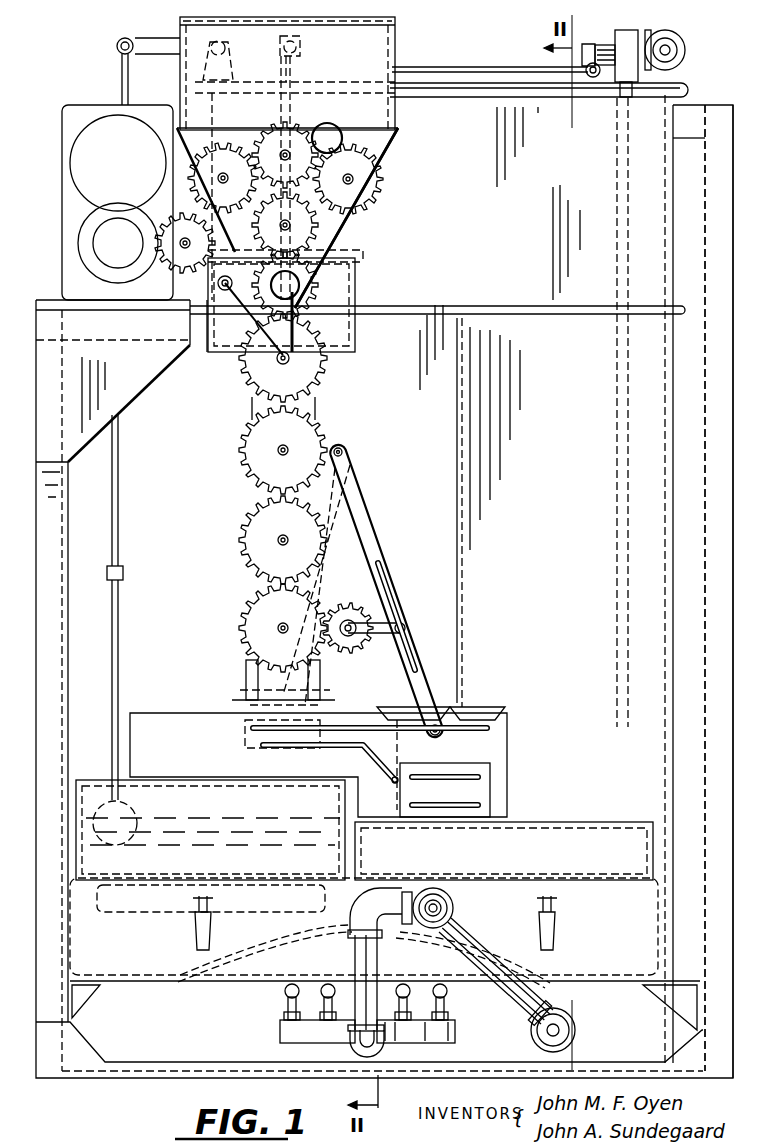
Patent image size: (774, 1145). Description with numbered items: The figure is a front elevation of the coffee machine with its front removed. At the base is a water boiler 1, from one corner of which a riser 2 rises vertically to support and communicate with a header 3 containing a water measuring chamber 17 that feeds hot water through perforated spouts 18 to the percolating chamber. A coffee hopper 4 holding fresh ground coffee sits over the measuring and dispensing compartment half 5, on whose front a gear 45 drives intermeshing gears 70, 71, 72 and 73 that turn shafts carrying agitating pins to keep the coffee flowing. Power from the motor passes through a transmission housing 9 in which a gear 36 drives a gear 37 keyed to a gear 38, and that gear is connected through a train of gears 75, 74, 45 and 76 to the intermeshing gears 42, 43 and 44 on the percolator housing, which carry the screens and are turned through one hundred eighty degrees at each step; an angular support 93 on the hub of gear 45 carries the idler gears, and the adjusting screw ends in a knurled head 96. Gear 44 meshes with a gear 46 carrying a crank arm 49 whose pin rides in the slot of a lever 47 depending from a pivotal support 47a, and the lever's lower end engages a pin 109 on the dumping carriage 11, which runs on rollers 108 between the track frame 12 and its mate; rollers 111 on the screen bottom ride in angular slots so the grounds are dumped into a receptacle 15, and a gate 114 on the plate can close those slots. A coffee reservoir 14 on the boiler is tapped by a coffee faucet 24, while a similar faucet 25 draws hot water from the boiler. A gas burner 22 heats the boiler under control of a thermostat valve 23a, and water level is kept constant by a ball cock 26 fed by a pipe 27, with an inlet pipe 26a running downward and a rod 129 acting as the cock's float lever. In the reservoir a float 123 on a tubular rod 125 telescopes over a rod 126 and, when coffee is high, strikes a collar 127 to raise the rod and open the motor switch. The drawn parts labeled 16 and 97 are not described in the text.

The water boiler 1 is at (655, 807).
The riser 2 is at (655, 478).
The header 3 is at (655, 222).
The coffee hopper 4 is at (388, 44).
The separable half of coffee measuring and dispensing compartment 5 is at (375, 150).
The transmission housing 9 is at (67, 212).
The dumping carriage 11 is at (397, 713).
The track frame 12 is at (170, 718).
The coffee reservoir 14 is at (98, 786).
The receptacle 15 is at (517, 835).
The top rail 16 is at (680, 83).
The water measuring chamber 17 is at (347, 250).
The perforated spouts 18 is at (345, 340).
The gas burner 22 is at (280, 1030).
The thermostat valve 23a is at (455, 902).
The coffee faucet 24 is at (193, 935).
The faucet 25 is at (563, 928).
The ball cock 26 is at (608, 65).
The inlet pipe 26a is at (620, 268).
The pipe 27 is at (686, 50).
The gear 36 is at (77, 140).
The gear 37 is at (82, 243).
The gear 38 is at (80, 270).
The gear 42 is at (255, 452).
The gear 43 is at (255, 542).
The gear 44 is at (255, 628).
The gear 45 is at (303, 276).
The gear 46 is at (342, 650).
The lever 47 is at (358, 508).
The pivotal support 47a is at (364, 440).
The crank arm 49 is at (372, 612).
The gear 70 is at (228, 150).
The gear 71 is at (270, 143).
The gear 72 is at (367, 180).
The gear 73 is at (302, 225).
The idler gear 74 is at (205, 303).
The gear 75 is at (185, 268).
The idler gear 76 is at (262, 373).
The angular support 93 is at (293, 337).
The knurled head 96 is at (308, 290).
The roller 97 is at (323, 132).
The rollers 108 is at (473, 720).
The pin 109 is at (447, 735).
The rollers 111 is at (390, 777).
The gate 114 is at (404, 805).
The float 123 is at (133, 812).
The tubular rod 125 is at (120, 656).
The rod 126 is at (118, 423).
The collar 127 is at (124, 574).
The rod 129 is at (497, 47).